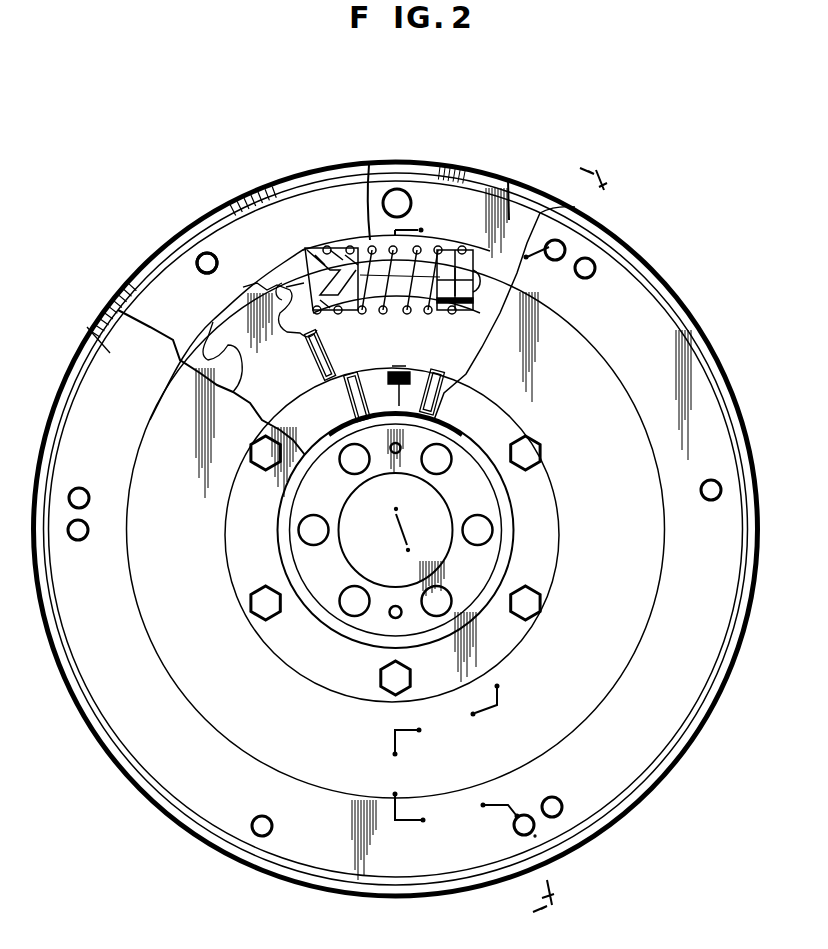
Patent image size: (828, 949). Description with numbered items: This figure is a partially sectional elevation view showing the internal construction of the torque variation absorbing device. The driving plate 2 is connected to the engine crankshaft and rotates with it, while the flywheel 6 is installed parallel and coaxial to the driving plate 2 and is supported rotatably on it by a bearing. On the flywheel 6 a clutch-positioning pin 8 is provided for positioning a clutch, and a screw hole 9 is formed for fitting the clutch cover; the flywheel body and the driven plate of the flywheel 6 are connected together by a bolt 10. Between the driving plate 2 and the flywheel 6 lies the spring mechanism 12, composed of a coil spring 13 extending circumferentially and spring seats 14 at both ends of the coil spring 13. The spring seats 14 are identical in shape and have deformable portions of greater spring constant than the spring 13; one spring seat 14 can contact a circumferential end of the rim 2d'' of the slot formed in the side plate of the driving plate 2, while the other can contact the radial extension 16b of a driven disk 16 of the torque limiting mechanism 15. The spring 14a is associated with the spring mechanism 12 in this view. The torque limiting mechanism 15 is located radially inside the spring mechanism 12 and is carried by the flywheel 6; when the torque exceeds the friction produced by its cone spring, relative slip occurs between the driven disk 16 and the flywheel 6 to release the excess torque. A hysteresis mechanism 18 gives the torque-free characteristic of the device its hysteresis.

The driving plate 2 is at (509, 186).
The rim of slot in side plate 2d'' is at (470, 309).
The flywheel 6 is at (100, 343).
The clutch-positioning pin 8 is at (563, 246).
The screw hole 9 is at (540, 835).
The bolt 10 is at (526, 452).
The spring mechanism 12 is at (346, 250).
The coil spring 13 is at (426, 248).
The spring seat 14 is at (320, 256).
The coil spring 14a is at (352, 305).
The torque limiting mechanism 15 is at (300, 372).
The driven disk 16 is at (272, 272).
The radial extension of driven disk 16b is at (247, 298).
The hysteresis mechanism 18 is at (402, 366).